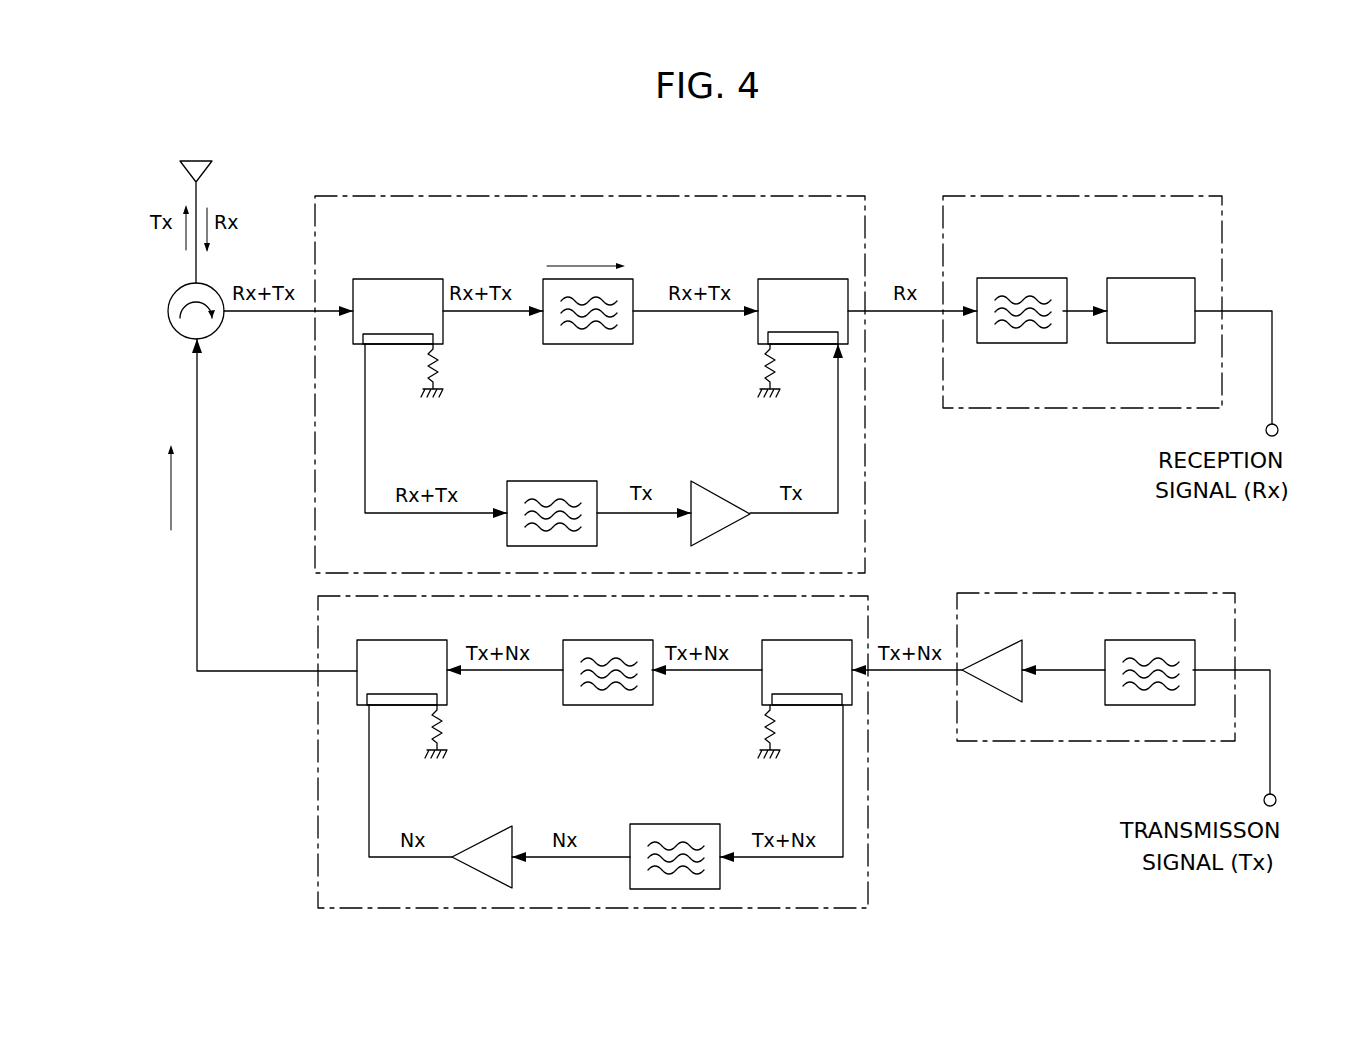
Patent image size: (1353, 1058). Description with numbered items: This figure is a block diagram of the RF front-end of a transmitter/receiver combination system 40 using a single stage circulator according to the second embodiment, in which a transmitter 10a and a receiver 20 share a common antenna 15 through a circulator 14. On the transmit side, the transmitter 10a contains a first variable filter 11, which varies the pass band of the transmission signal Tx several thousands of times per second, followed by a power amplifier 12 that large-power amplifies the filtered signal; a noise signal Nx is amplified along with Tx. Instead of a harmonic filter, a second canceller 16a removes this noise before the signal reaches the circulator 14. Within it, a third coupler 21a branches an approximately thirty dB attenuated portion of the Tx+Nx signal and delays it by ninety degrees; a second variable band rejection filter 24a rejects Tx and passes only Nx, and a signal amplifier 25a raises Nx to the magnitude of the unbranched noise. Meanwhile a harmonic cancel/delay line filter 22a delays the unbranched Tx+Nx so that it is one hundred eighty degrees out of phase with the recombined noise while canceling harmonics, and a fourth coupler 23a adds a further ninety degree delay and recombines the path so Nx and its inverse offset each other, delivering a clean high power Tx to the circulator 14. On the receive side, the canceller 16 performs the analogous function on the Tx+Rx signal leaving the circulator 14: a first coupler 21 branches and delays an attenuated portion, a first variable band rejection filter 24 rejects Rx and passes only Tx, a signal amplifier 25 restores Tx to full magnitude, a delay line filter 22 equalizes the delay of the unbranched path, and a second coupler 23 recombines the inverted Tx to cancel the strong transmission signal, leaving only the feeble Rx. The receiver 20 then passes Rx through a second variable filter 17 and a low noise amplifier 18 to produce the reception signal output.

The transmitter 10a is at (1055, 741).
The first variable filter 11 is at (1120, 705).
The power amplifier 12 is at (1008, 695).
The circulator 14 is at (224, 318).
The antenna 15 is at (202, 173).
The canceller 16 is at (428, 196).
The second canceller 16a is at (870, 826).
The second variable filter 17 is at (1012, 343).
The low noise amplifier 18 is at (1125, 343).
The receiver 20 is at (1057, 408).
The first coupler 21 is at (418, 279).
The delay line filter 22 is at (633, 279).
The second coupler 23 is at (812, 279).
The first variable band rejection filter 24 is at (540, 481).
The signal amplifier 25 is at (710, 490).
The third coupler 21a is at (824, 640).
The harmonic cancel/delay line filter 22a is at (630, 640).
The fourth coupler 23a is at (431, 640).
The second variable band rejection filter 24a is at (668, 824).
The signal amplifier 25a is at (480, 840).
The transmitter/receiver combination system 40 is at (203, 680).